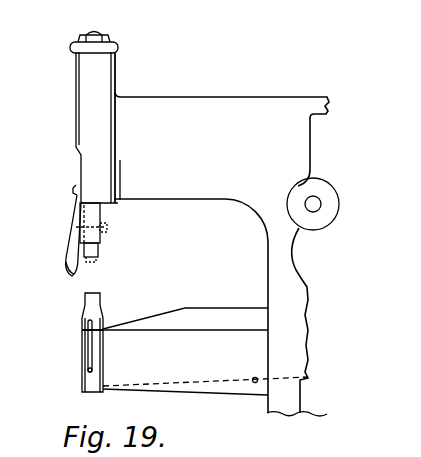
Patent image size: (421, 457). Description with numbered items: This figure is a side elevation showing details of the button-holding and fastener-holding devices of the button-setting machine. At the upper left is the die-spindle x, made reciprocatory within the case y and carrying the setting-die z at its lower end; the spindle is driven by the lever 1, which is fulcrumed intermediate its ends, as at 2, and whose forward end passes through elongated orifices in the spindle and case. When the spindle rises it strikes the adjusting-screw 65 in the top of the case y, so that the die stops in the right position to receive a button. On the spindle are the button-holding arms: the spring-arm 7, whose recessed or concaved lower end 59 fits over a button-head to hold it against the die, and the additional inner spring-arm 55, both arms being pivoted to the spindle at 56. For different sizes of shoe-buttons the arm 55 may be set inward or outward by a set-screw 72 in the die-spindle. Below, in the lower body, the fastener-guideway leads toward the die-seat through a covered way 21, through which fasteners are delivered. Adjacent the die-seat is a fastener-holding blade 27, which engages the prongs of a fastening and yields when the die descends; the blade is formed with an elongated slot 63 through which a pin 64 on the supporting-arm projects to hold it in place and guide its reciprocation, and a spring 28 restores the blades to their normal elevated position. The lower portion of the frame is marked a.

The lever 1 is at (88, 127).
The fulcrum 2 is at (227, 254).
The lower body portion a is at (185, 362).
The case y is at (86, 98).
The die-spindle x is at (100, 211).
The setting-die z is at (98, 250).
The adjusting-screw 65 is at (94, 31).
The pivot 56 is at (76, 190).
The spring-arm 55 is at (80, 227).
The spring-arm 7 is at (70, 237).
The recessed lower end 59 is at (68, 265).
The set-screw 72 is at (116, 232).
The covered way 21 is at (185, 310).
The spring 28 is at (152, 386).
The elongated slot 63 is at (105, 350).
The pin 64 is at (88, 348).
The fastener-holding blade 27 is at (82, 366).